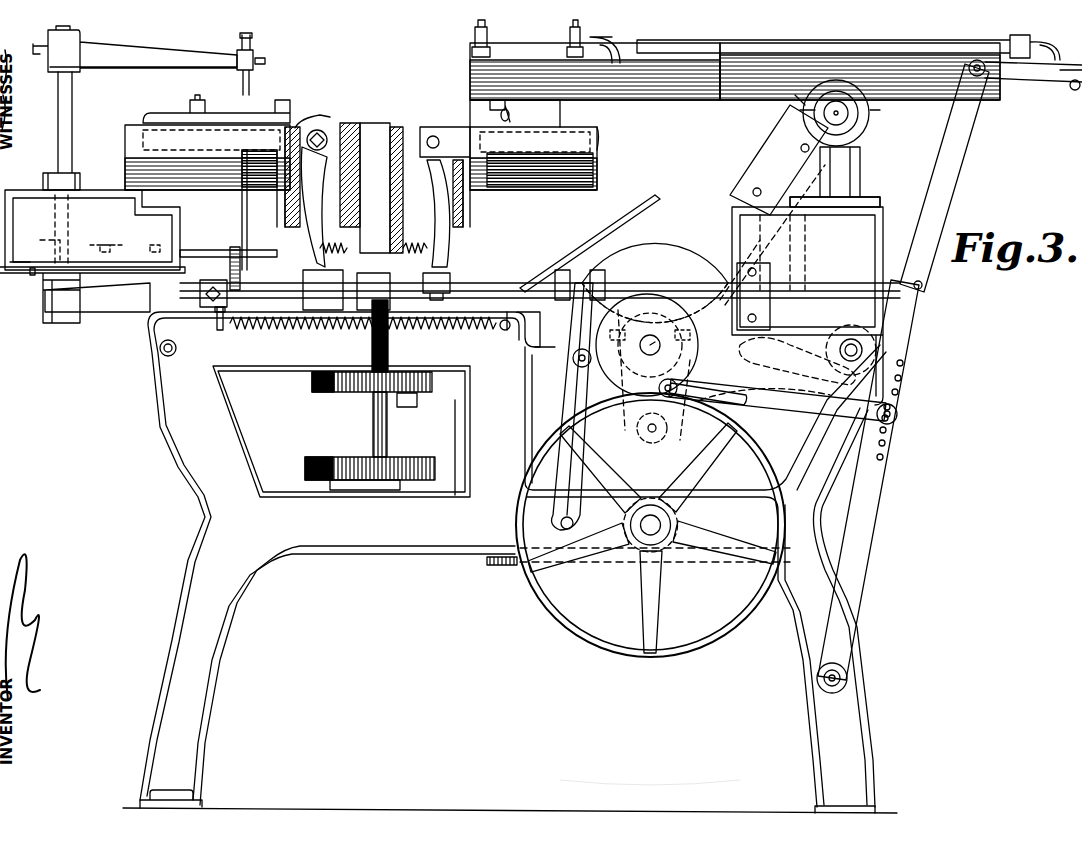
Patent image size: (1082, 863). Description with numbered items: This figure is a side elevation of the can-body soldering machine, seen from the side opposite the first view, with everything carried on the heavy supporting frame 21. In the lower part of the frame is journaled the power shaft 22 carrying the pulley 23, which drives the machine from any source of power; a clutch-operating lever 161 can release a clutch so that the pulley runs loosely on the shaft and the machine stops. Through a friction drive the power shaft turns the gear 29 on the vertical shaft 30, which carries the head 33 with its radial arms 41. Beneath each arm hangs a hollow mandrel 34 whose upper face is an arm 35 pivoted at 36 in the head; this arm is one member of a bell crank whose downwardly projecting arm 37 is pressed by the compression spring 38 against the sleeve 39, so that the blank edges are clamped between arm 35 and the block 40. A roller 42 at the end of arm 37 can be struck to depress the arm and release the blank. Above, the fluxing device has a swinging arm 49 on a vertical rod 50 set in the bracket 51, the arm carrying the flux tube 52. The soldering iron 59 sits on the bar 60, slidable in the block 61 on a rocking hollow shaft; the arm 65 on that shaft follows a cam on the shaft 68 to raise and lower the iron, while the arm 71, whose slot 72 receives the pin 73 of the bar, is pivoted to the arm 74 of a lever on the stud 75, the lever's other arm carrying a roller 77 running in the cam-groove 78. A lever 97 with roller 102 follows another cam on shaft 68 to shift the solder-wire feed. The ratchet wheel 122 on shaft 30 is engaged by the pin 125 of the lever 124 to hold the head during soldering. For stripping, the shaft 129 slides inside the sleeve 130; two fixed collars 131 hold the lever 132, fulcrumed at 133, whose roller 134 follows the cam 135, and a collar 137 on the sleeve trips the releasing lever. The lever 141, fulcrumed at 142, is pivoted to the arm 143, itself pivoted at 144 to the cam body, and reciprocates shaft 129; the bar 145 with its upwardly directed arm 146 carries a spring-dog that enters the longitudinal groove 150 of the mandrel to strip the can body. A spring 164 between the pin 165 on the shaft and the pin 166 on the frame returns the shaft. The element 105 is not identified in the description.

The supporting frame 21 is at (197, 465).
The power shaft 22 is at (648, 530).
The pulley 23 is at (522, 600).
The gear 29 is at (325, 460).
The vertical shaft 30 is at (372, 410).
The head 33 is at (463, 208).
The mandrel 34 is at (280, 200).
The arm 35 is at (298, 127).
The pivot 36 is at (325, 132).
The downwardly projecting arm 37 is at (312, 228).
The compression spring 38 is at (330, 243).
The sleeve 39 is at (432, 200).
The block 40 is at (160, 125).
The radial arm 41 is at (240, 100).
The roller 42 is at (300, 280).
The swinging arm 49 is at (148, 60).
The vertical rod 50 is at (80, 118).
The bracket 51 is at (133, 303).
The tube 52 is at (252, 42).
The soldering iron 59 is at (600, 100).
The bar 60 is at (690, 90).
The block 61 is at (750, 105).
The arm 65 is at (745, 172).
The shaft 68 is at (652, 343).
The arm 71 is at (1005, 82).
The slot 72 is at (1075, 92).
The pin 73 is at (1060, 82).
The arm 74 is at (938, 172).
The stud 75 is at (851, 362).
The roller 77 is at (654, 440).
The cam-groove 78 is at (675, 243).
The lever 97 is at (770, 321).
The roller 102 is at (760, 345).
The pipe 105 is at (665, 52).
The ratchet wheel 122 is at (312, 380).
The lever 124 is at (462, 400).
The pin 125 is at (405, 400).
The shaft 129 is at (835, 300).
The sleeve 130 is at (612, 283).
The fixed collars 131 is at (598, 270).
The lever 132 is at (540, 283).
The fulcrum 133 is at (560, 524).
The roller 134 is at (573, 358).
The cam 135 is at (640, 298).
The collar 137 is at (325, 328).
The lever 141 is at (878, 492).
The fulcrum 142 is at (848, 678).
The arm 143 is at (855, 425).
The pivot 144 is at (680, 385).
The bar 145 is at (230, 268).
The upwardly directed arm 146 is at (242, 218).
The longitudinal groove 150 is at (258, 185).
The clutch-operating lever 161 is at (505, 565).
The spring 164 is at (415, 328).
The pin 165 is at (220, 330).
The pin 166 is at (505, 332).